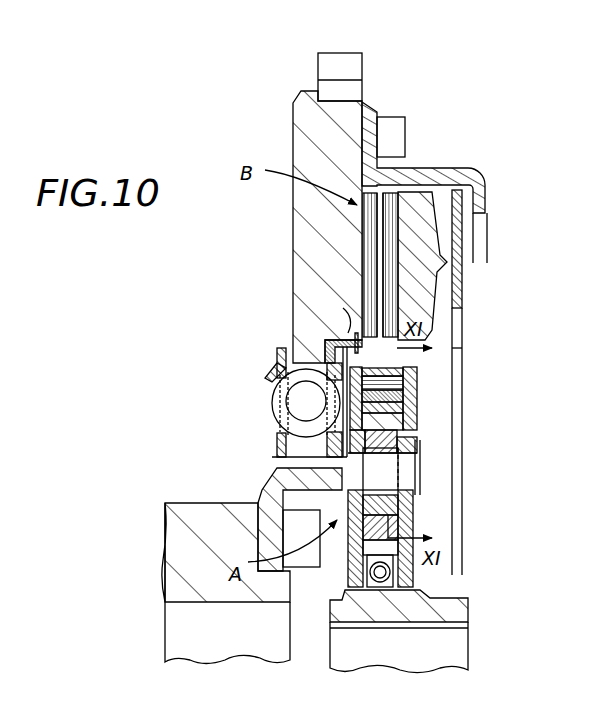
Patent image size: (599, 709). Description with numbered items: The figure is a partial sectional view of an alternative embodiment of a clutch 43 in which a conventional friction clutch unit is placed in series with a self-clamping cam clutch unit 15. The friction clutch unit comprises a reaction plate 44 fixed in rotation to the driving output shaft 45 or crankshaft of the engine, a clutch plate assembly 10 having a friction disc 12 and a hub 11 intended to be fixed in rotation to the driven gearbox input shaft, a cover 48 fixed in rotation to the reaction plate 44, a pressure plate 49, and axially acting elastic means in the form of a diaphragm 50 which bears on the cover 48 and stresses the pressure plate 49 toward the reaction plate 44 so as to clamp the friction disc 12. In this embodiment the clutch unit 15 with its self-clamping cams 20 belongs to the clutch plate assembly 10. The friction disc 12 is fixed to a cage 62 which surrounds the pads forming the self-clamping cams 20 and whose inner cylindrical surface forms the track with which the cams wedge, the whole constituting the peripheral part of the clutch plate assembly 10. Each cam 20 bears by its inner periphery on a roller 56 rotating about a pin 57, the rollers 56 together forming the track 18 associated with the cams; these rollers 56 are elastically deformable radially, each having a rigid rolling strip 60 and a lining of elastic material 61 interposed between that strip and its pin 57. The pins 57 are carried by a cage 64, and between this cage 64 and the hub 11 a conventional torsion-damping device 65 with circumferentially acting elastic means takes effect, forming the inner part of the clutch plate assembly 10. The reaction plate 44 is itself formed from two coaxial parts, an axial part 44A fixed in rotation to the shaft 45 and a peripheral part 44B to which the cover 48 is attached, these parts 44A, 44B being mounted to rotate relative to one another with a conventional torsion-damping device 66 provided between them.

The clutch plate assembly 10 is at (395, 183).
The hub 11 is at (472, 603).
The friction disc 12 is at (360, 235).
The clutch unit 15 is at (417, 407).
The track 18 is at (380, 469).
The self-clamping cam 20 is at (410, 387).
The clutch 43 is at (380, 98).
The reaction plate 44 is at (280, 152).
The axial part 44A is at (263, 487).
The peripheral part 44B is at (300, 265).
The output shaft 45 is at (186, 500).
The cover 48 is at (480, 167).
The pressure plate 49 is at (432, 183).
The diaphragm 50 is at (467, 290).
The roller 56 is at (347, 557).
The pin 57 is at (415, 472).
The rigid rolling strip 60 is at (392, 520).
The lining of elastic material 61 is at (388, 512).
The cage 62 is at (422, 368).
The cage 64 is at (420, 437).
The torsion-damping device 65 is at (380, 582).
The torsion-damping device 66 is at (272, 408).